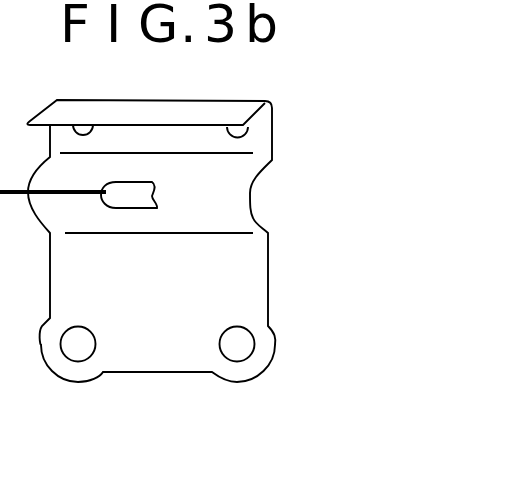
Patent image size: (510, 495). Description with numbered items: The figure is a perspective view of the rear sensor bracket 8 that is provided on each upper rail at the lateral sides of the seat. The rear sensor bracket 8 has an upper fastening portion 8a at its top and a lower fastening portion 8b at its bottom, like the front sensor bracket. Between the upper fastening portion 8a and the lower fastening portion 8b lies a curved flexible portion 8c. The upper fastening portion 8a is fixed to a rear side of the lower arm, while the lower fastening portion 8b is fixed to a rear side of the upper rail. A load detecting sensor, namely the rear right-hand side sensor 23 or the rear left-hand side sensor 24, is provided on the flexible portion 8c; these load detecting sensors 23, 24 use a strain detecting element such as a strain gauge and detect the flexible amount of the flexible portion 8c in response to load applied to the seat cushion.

The rear sensor bracket 8 is at (183, 225).
The upper fastening portion 8a is at (272, 138).
The lower fastening portion 8b is at (268, 342).
The flexible portion 8c is at (250, 217).
The rear left-hand side sensor 24 is at (183, 188).
The rear right-hand side sensor 23 is at (143, 179).